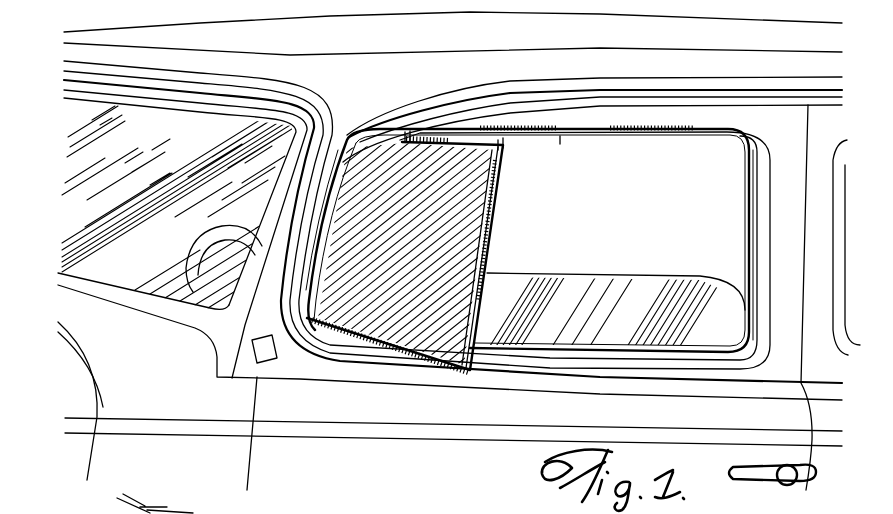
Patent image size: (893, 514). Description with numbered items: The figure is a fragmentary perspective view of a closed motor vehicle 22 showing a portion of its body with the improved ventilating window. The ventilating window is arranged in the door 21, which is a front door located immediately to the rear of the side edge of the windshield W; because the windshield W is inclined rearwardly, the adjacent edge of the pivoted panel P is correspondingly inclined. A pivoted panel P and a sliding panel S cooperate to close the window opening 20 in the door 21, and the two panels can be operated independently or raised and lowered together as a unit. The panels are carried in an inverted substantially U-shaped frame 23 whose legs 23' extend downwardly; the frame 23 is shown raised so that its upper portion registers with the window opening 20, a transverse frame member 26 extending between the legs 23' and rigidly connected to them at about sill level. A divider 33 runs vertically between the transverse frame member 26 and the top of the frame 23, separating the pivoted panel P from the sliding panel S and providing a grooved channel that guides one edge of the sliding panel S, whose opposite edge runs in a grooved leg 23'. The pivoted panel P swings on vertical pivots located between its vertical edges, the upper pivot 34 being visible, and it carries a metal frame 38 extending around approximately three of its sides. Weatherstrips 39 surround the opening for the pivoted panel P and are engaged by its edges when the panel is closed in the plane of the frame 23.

The window opening 20 is at (611, 139).
The door 21 is at (495, 412).
The motor vehicle 22 is at (467, 61).
The frame 23 is at (586, 152).
The legs 23' is at (533, 245).
The transverse frame member 26 is at (585, 344).
The divider 33 is at (498, 147).
The upper pivot 34 is at (407, 135).
The metal frame 38 is at (400, 352).
The weatherstrips 39 is at (480, 200).
The pivoted panel P is at (478, 243).
The sliding panel S is at (604, 274).
The windshield w is at (200, 117).